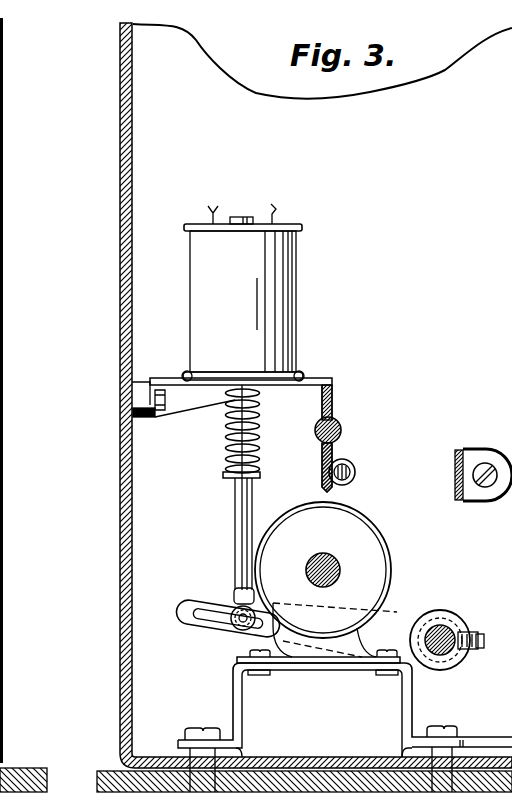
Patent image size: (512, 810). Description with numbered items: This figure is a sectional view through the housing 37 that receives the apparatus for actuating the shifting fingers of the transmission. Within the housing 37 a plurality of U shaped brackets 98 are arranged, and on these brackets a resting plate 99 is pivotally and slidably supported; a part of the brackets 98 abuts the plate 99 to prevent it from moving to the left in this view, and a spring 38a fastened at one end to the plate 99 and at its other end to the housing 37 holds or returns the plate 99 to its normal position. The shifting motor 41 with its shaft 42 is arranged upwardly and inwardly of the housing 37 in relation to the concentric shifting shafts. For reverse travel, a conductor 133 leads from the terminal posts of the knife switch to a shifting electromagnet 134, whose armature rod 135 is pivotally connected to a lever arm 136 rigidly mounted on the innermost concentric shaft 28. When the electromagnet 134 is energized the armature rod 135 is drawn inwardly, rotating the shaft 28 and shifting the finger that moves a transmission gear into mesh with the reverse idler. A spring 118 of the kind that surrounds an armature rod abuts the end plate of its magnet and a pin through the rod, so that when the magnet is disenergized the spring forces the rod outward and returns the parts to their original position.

The housing 37 is at (119, 373).
The conductor 133 is at (235, 204).
The shifting electromagnet 134 is at (288, 300).
The U shaped brackets 98 is at (203, 393).
The spring 118 is at (253, 398).
The resting plate 99 is at (335, 455).
The spring 38a is at (355, 465).
The armature rod 135 is at (240, 495).
The shaft 42 is at (334, 560).
The shifting motor 41 is at (392, 552).
The lever arm 136 is at (388, 620).
The innermost concentric shaft 28 is at (443, 632).